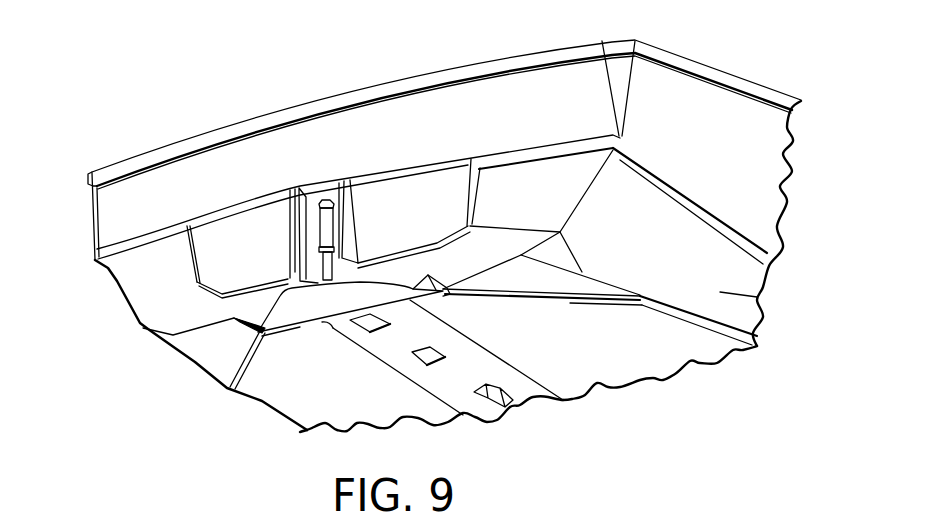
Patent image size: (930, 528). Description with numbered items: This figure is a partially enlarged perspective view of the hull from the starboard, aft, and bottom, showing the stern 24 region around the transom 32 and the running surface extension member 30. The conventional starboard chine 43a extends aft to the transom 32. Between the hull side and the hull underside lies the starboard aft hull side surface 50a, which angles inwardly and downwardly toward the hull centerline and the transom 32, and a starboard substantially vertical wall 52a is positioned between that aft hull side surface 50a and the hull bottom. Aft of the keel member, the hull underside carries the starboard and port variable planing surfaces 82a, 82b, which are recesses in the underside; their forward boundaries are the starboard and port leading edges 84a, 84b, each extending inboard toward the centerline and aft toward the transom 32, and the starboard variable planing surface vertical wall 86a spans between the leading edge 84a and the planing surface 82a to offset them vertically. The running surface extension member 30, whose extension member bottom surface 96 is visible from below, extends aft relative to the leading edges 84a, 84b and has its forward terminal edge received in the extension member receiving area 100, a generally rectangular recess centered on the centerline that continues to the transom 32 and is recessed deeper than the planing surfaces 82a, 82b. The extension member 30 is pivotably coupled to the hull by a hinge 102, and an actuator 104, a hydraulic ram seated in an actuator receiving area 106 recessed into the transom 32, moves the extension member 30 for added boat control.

The stern 24 is at (190, 119).
The running surface extension member 30 is at (272, 376).
The transom 32 is at (129, 281).
The starboard chine 43a is at (718, 360).
The starboard aft hull side surface 50a is at (760, 297).
The starboard substantially vertical wall 52a is at (753, 343).
The starboard variable planing surface 82a is at (549, 285).
The port variable planing surface 82b is at (233, 355).
The starboard leading edge 84a is at (613, 303).
The port leading edge 84b is at (228, 373).
The starboard variable planing surface vertical wall 86a is at (570, 301).
The extension member bottom surface 96 is at (331, 311).
The extension member receiving area 100 is at (420, 288).
The hinge 102 is at (326, 322).
The actuator 104 is at (328, 228).
The actuator receiving area 106 is at (303, 240).